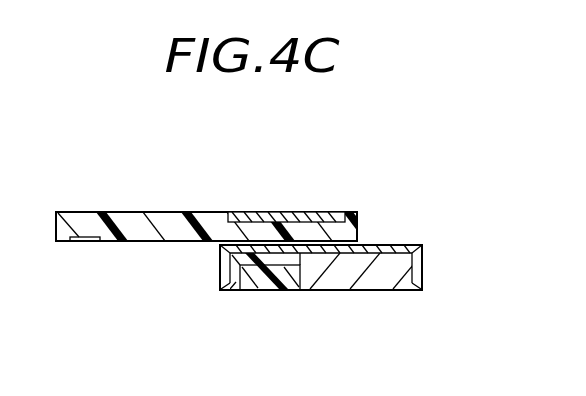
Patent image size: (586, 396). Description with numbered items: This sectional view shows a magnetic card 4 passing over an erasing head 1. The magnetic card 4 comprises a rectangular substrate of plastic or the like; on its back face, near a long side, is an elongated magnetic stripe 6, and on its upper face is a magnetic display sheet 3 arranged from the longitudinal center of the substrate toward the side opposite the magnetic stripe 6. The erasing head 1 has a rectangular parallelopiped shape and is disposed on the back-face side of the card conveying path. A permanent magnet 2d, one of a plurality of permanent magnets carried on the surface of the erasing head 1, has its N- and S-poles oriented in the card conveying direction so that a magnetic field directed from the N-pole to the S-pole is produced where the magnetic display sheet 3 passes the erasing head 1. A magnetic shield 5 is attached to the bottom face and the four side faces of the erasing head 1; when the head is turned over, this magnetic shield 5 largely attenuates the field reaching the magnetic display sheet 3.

The erasing head 1 is at (321, 290).
The permanent magnet 2d is at (240, 304).
The magnetic display sheet 3 is at (286, 177).
The magnetic card 4 is at (215, 188).
The magnetic shield 5 is at (348, 207).
The magnetic stripe 6 is at (70, 267).